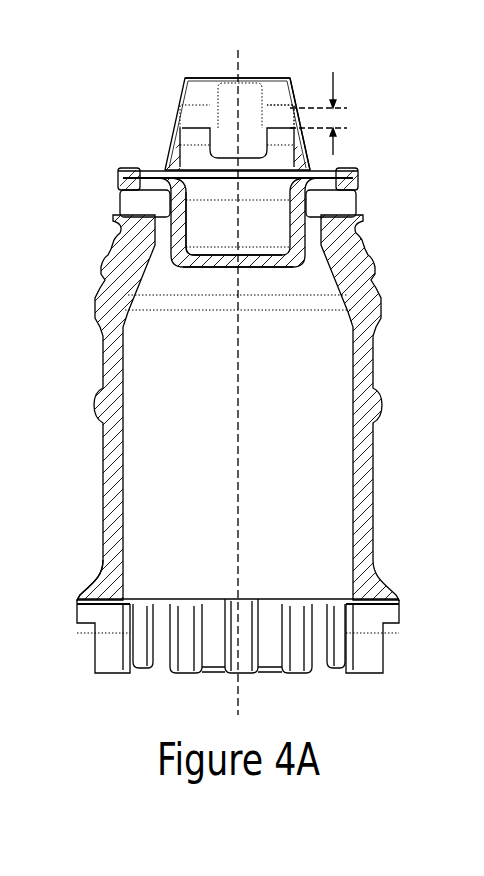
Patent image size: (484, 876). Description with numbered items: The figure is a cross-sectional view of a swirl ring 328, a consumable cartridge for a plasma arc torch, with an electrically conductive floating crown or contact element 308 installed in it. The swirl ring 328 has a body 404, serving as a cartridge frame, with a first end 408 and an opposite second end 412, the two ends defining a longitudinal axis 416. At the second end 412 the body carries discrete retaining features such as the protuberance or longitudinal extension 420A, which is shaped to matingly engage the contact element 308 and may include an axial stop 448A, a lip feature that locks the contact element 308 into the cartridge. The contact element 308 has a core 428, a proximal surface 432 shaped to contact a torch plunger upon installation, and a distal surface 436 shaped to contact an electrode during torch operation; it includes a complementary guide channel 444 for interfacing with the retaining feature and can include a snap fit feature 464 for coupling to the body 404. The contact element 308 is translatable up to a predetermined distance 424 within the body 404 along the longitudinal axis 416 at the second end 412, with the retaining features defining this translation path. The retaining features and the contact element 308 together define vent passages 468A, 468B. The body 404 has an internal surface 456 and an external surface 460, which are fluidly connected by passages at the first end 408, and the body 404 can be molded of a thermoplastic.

The contact element 308 is at (178, 160).
The swirl ring 328 is at (103, 258).
The body 404 is at (93, 670).
The first end 408 is at (365, 685).
The second end 412 is at (350, 97).
The longitudinal axis 416 is at (246, 72).
The discrete retaining feature 420A is at (272, 78).
The predetermined distance 424 is at (336, 118).
The core 428 is at (213, 264).
The proximal surface 432 is at (256, 247).
The distal surface 436 is at (256, 250).
The guide channel 444 is at (224, 155).
The axial stop 448A is at (283, 102).
The internal surface 456 is at (182, 622).
The external surface 460 is at (102, 566).
The snap fit feature 464 is at (118, 172).
The vent passage 468A is at (142, 173).
The vent passage 468B is at (333, 173).